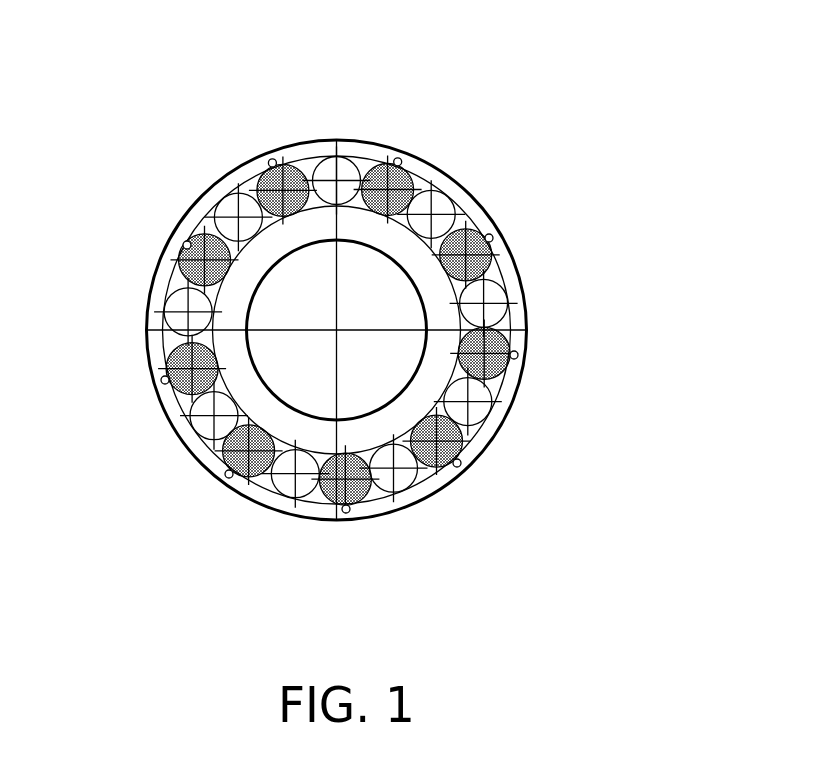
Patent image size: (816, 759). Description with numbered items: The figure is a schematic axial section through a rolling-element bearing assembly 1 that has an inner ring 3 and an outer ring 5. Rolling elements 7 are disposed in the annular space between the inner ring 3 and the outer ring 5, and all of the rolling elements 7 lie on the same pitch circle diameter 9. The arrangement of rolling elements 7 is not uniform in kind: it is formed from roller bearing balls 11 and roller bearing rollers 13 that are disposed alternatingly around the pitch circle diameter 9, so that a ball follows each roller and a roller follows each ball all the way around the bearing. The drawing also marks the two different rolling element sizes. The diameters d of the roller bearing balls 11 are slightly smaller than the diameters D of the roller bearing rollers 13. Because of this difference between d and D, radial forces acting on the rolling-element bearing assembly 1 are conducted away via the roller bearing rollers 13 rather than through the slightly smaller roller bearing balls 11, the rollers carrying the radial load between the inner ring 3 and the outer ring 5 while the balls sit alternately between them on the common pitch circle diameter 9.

The rolling-element bearing assembly 1 is at (342, 317).
The inner ring 3 is at (418, 257).
The outer ring 5 is at (515, 315).
The rolling elements 7 is at (516, 360).
The pitch circle diameter 9 is at (408, 464).
The roller bearing balls 11 is at (335, 386).
The roller bearing rollers 13 is at (236, 470).
The diameter of the roller bearing rollers D is at (300, 337).
The diameter of the roller bearing balls d is at (310, 370).